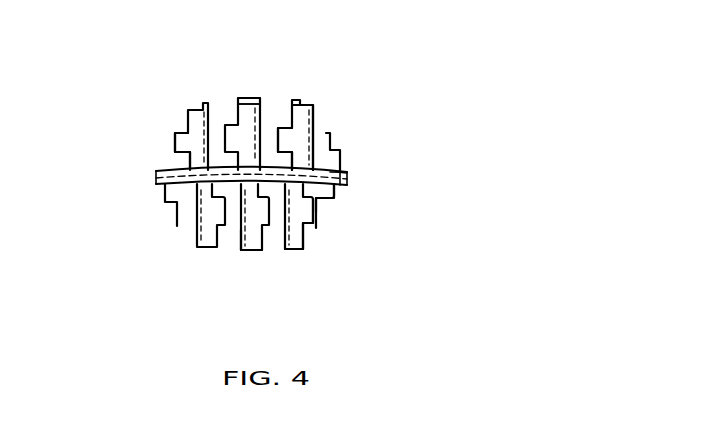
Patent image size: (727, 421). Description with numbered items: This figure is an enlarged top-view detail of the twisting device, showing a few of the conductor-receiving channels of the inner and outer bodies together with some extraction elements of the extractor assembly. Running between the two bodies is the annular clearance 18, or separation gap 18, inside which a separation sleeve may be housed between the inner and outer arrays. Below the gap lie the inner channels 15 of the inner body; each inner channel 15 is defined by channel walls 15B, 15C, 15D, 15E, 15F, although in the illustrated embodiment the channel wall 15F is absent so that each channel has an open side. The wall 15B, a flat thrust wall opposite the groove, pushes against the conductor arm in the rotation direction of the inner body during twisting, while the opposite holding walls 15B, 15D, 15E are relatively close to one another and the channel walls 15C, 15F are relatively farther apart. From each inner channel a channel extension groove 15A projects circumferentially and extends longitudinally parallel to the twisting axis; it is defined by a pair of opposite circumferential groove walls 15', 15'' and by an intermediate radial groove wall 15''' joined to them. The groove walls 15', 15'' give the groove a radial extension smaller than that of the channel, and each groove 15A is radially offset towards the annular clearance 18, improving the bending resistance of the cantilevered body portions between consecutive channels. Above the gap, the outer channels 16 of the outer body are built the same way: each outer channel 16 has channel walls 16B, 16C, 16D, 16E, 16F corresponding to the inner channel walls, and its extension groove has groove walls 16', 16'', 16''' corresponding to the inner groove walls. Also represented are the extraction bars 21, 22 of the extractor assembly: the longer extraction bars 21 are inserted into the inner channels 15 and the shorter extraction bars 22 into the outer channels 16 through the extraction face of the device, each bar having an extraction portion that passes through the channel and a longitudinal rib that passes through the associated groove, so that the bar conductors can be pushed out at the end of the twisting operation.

The inner channel 15 is at (175, 258).
The groove wall 15' is at (372, 248).
The groove wall 15'' is at (409, 213).
The intermediate groove wall 15''' is at (399, 231).
The channel extension groove 15A is at (318, 228).
The thrust wall 15B is at (243, 252).
The channel wall 15C is at (292, 255).
The holding wall 15D is at (301, 252).
The holding wall 15E is at (343, 191).
The channel wall 15F is at (338, 184).
The outer channel 16 is at (253, 93).
The groove wall 16' is at (169, 107).
The groove wall 16'' is at (128, 135).
The intermediate groove wall 16''' is at (133, 98).
The channel wall 16B is at (313, 128).
The channel wall 16C is at (303, 98).
The channel wall 16D is at (278, 128).
The channel wall 16E is at (266, 150).
The channel wall 16F is at (283, 166).
The annular clearance 18 is at (217, 170).
The extraction bar 21 is at (250, 250).
The extraction bar 22 is at (242, 98).